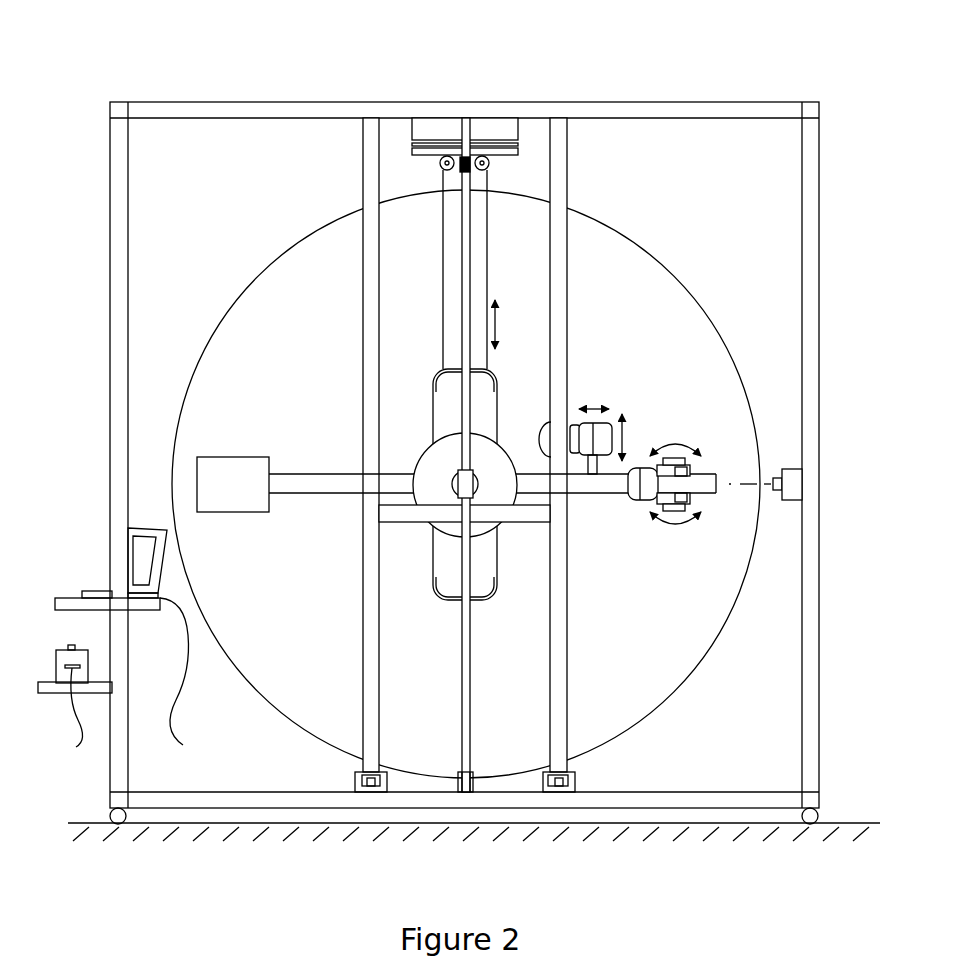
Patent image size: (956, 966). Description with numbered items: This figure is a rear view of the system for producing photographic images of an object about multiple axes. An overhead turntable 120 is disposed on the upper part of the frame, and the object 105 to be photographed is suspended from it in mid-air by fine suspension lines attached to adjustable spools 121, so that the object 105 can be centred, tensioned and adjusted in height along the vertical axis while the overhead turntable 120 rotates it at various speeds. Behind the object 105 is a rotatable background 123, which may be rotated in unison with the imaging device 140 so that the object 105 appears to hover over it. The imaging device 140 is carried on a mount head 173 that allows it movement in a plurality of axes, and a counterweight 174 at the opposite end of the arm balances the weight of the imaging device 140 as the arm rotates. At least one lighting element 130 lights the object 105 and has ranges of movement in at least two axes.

The object 105 is at (480, 395).
The overhead turntable 120 is at (425, 130).
The adjustable spool 121 is at (479, 169).
The rotatable background 123 is at (685, 582).
The lighting element 130 is at (605, 428).
The imaging device 140 is at (690, 468).
The mount head 173 is at (716, 485).
The counterweight 174 is at (210, 480).